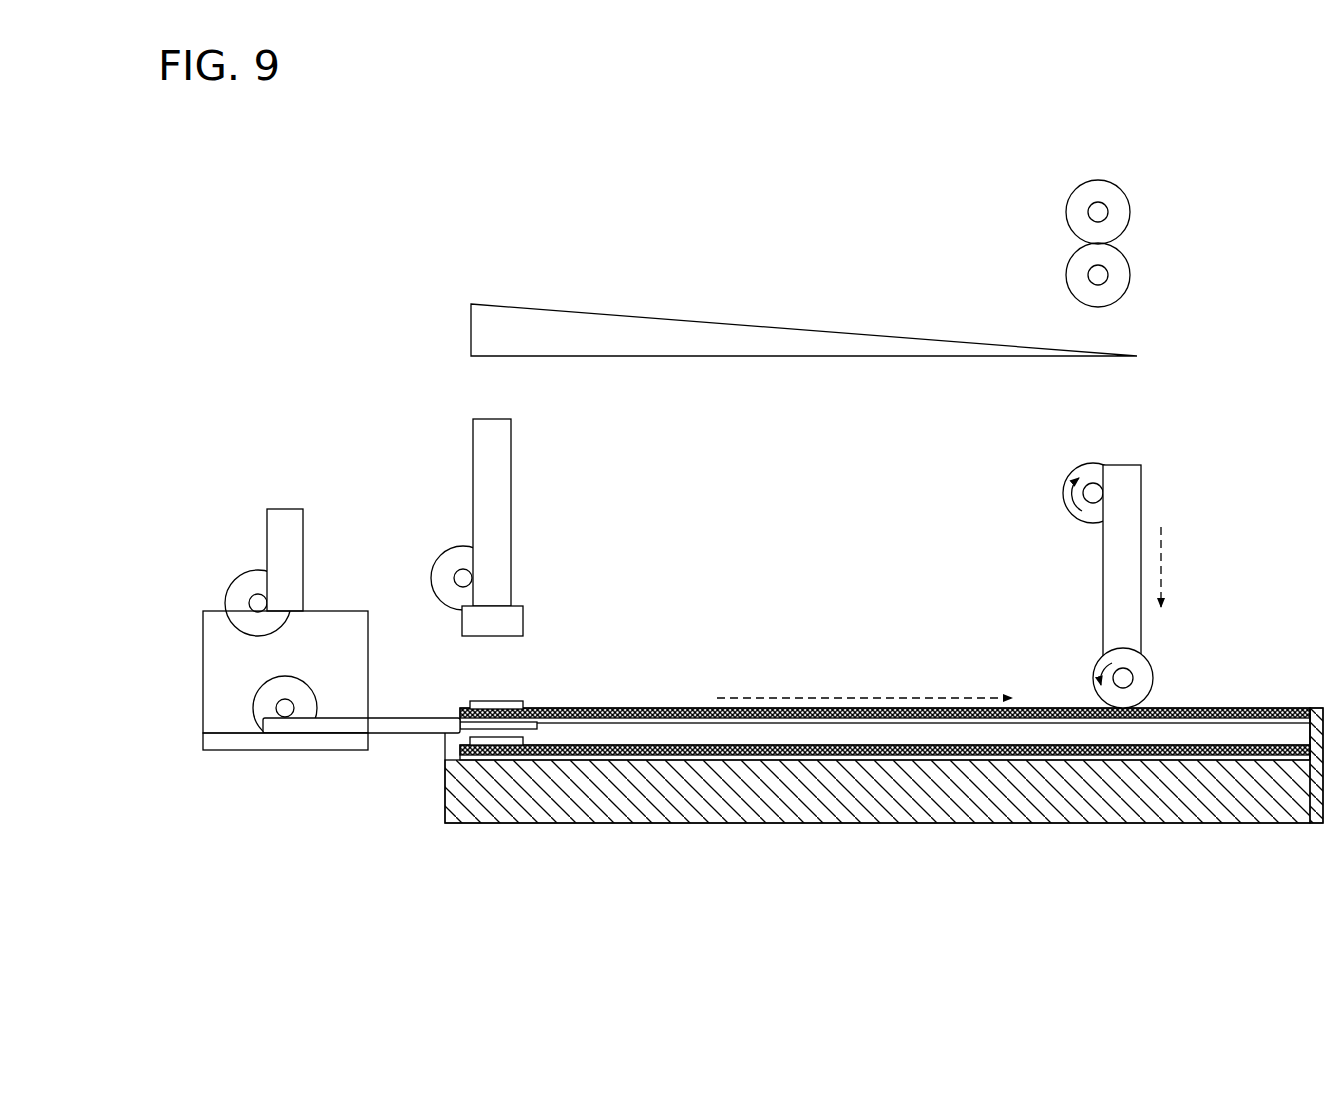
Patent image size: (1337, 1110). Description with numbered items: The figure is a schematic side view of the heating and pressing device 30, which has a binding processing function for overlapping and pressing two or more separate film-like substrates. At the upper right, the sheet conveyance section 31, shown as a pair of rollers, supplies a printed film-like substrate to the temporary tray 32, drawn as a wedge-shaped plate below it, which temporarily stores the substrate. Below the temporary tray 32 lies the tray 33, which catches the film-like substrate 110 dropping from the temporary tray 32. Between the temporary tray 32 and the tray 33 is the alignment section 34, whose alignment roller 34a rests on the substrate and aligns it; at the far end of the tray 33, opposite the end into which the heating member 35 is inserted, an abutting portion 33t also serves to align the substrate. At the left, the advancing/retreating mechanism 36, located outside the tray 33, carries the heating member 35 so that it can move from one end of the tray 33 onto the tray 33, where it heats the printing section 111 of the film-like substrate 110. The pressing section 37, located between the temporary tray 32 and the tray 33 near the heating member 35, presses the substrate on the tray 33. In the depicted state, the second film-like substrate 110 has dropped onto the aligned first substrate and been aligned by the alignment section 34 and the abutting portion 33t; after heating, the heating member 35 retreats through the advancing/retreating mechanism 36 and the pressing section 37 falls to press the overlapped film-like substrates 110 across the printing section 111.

The heating and pressing device 30 is at (803, 216).
The sheet conveyance section 31 is at (1098, 180).
The temporary tray 32 is at (577, 310).
The tray 33 is at (1245, 760).
The abutting portion 33t is at (1305, 733).
The alignment section 34 is at (1142, 492).
The alignment roller 34a is at (1155, 675).
The heating member 35 is at (534, 729).
The advancing/retreating mechanism 36 is at (372, 688).
The pressing section 37 is at (512, 435).
The film-like substrate 110 is at (698, 745).
The printing section 111 is at (503, 701).